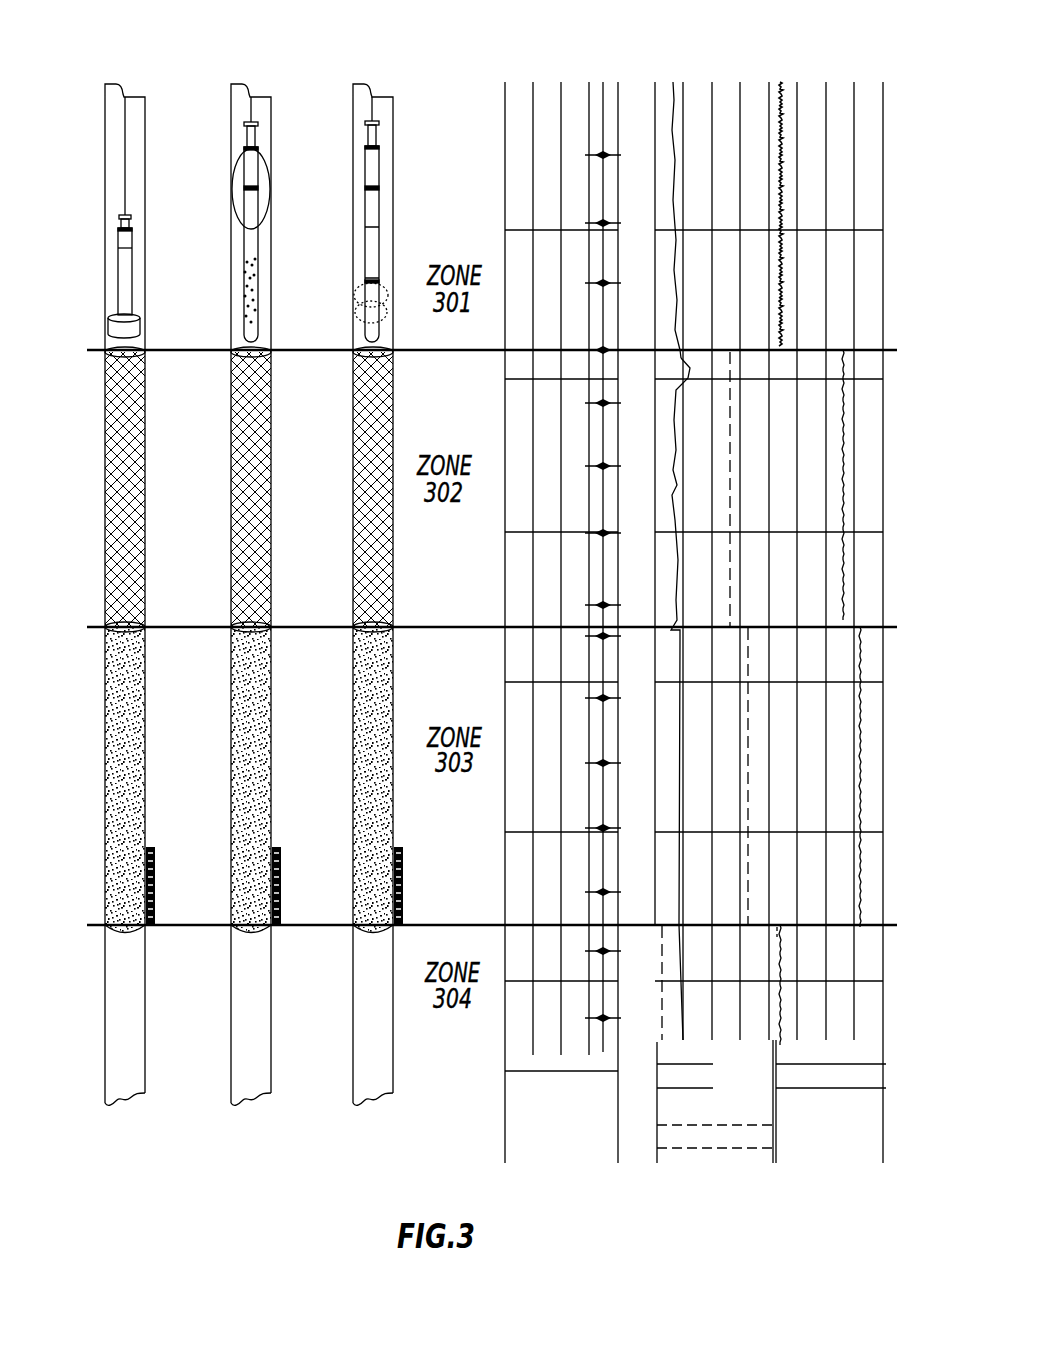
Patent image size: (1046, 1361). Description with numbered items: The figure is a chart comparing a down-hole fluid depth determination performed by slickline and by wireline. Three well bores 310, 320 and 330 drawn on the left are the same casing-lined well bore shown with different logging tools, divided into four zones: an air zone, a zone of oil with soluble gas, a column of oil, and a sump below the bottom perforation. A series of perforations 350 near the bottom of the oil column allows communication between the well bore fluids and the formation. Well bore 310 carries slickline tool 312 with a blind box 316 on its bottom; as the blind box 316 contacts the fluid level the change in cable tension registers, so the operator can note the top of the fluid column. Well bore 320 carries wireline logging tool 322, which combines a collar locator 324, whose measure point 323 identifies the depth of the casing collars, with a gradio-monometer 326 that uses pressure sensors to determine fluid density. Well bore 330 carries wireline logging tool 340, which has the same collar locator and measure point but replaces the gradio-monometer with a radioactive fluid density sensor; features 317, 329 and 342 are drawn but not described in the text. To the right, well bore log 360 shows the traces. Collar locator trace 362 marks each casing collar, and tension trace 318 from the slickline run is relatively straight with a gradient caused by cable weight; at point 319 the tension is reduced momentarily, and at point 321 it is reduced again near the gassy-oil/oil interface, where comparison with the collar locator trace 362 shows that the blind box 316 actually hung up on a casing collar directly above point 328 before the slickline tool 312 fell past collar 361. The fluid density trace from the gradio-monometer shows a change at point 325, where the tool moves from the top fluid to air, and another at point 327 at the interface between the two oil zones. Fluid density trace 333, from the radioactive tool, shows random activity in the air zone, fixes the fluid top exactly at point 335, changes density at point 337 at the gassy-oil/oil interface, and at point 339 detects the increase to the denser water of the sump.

The well bore 310 is at (119, 84).
The slickline tool 312 is at (123, 268).
The blind box 316 is at (120, 328).
The well bore 320 is at (250, 92).
The wireline logging tool 322 is at (252, 165).
The measure point 323 is at (248, 190).
The collar locator 324 is at (251, 217).
The gradio-monometer 326 is at (247, 285).
The well bore 330 is at (362, 82).
The wireline logging tool 340 is at (372, 212).
The fluid interface 342 is at (362, 283).
The perforations 350 is at (157, 860).
The well bore log 360 is at (736, 1192).
The collar 361 is at (618, 605).
The collar locator trace 362 is at (600, 90).
The tension trace 318 is at (673, 82).
The point 325 is at (693, 348).
The tension trace spike 317 is at (684, 368).
The point 319 is at (673, 487).
The point 321 is at (680, 603).
The point 327 is at (743, 625).
The point 328 is at (748, 652).
The fluid density baseline zone 304 329 is at (762, 925).
The fluid density trace 333 is at (843, 488).
The point 335 is at (797, 347).
The point 337 is at (850, 625).
The point 339 is at (870, 925).